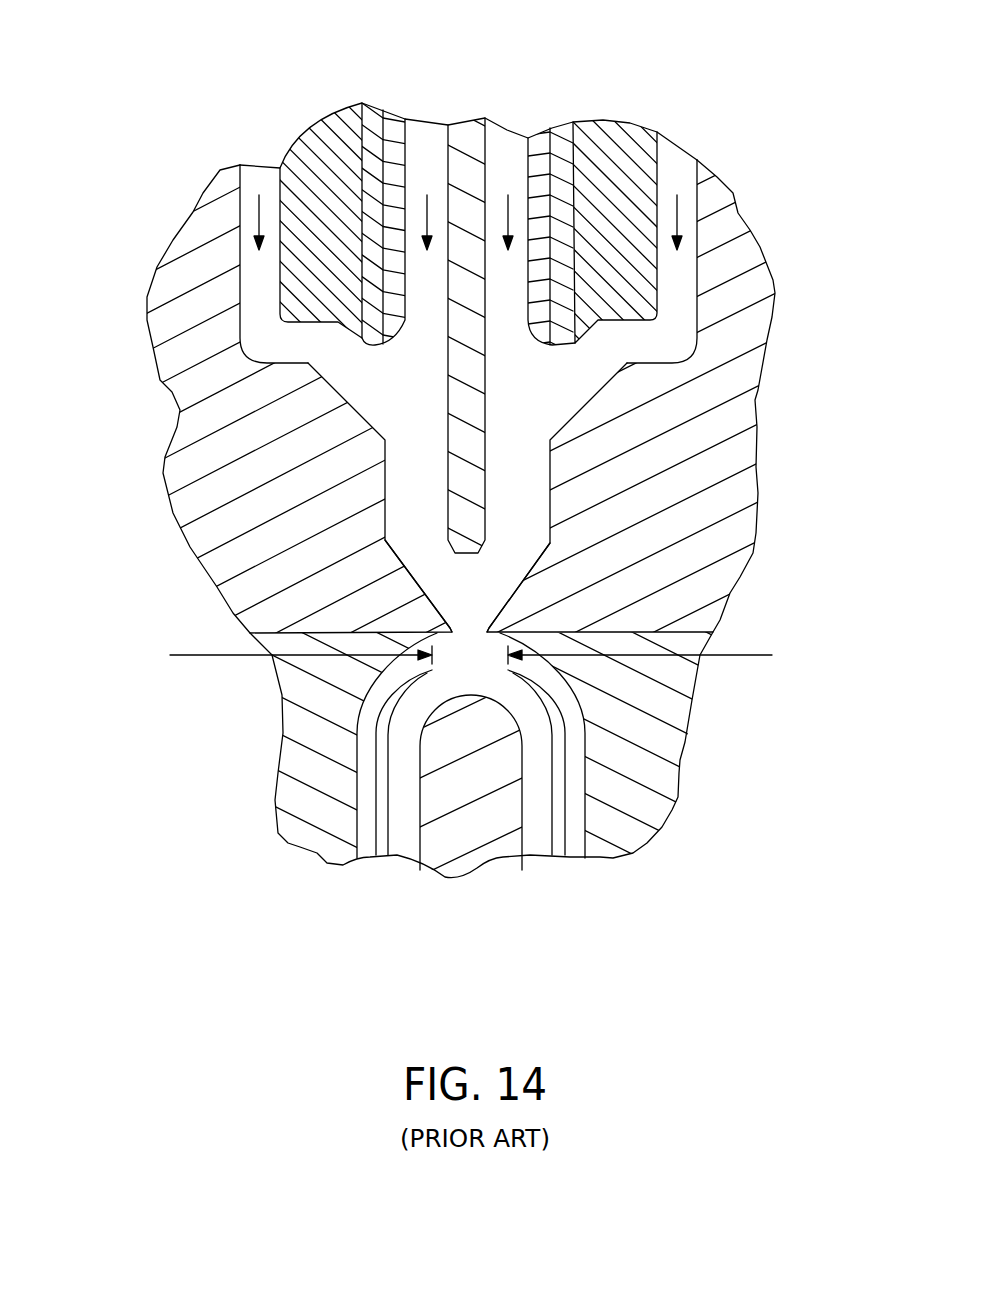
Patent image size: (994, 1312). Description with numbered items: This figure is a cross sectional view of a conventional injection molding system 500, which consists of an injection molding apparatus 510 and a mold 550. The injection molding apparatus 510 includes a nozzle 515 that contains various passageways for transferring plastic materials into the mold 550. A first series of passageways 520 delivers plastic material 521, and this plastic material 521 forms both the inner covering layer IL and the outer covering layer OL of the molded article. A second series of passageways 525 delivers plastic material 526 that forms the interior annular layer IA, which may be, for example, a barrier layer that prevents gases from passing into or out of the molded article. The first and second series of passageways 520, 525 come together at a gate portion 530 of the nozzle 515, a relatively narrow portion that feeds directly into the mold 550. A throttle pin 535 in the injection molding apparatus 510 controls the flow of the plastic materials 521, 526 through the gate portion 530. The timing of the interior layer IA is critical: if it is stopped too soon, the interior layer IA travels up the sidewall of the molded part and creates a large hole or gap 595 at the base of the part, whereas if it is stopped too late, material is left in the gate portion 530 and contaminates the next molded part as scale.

The injection molding system 500 is at (746, 129).
The injection molding apparatus 510 is at (755, 400).
The nozzle 515 is at (697, 310).
The first series of passageways 520 is at (258, 183).
The plastic material 521 is at (260, 283).
The second series of passageways 525 is at (370, 135).
The plastic material 526 is at (562, 212).
The gate portion 530 is at (487, 630).
The throttle pin 535 is at (487, 383).
The mold 550 is at (685, 742).
The hole or gap 595 is at (445, 658).
The outer covering layer OL is at (577, 812).
The interior annular layer IA is at (560, 847).
The inner covering layer IL is at (532, 847).